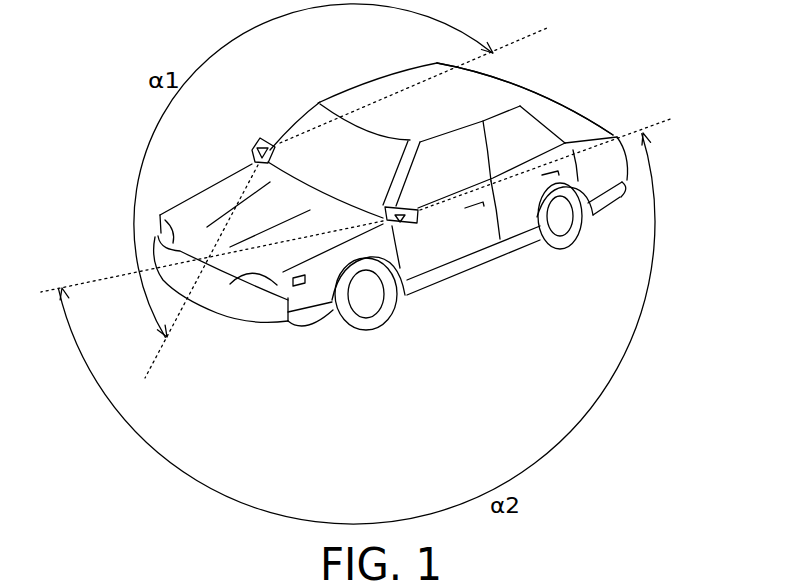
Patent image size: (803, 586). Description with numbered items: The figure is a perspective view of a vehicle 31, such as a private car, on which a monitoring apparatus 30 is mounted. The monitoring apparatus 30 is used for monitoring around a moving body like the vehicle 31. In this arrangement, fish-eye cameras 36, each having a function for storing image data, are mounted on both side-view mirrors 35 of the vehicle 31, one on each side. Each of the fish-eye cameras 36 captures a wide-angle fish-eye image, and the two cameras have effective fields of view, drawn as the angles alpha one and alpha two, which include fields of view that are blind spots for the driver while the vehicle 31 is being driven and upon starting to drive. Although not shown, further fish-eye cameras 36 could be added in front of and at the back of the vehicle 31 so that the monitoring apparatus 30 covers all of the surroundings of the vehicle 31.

The monitoring apparatus 30 is at (632, 82).
The vehicle 31 is at (568, 97).
The side-view mirrors 35 is at (267, 142).
The fish-eye cameras 36 is at (257, 142).